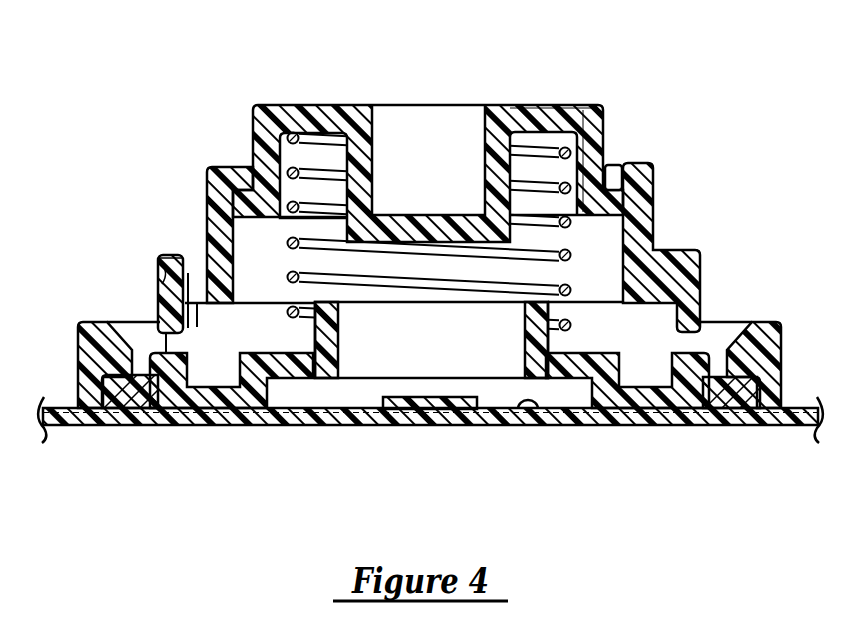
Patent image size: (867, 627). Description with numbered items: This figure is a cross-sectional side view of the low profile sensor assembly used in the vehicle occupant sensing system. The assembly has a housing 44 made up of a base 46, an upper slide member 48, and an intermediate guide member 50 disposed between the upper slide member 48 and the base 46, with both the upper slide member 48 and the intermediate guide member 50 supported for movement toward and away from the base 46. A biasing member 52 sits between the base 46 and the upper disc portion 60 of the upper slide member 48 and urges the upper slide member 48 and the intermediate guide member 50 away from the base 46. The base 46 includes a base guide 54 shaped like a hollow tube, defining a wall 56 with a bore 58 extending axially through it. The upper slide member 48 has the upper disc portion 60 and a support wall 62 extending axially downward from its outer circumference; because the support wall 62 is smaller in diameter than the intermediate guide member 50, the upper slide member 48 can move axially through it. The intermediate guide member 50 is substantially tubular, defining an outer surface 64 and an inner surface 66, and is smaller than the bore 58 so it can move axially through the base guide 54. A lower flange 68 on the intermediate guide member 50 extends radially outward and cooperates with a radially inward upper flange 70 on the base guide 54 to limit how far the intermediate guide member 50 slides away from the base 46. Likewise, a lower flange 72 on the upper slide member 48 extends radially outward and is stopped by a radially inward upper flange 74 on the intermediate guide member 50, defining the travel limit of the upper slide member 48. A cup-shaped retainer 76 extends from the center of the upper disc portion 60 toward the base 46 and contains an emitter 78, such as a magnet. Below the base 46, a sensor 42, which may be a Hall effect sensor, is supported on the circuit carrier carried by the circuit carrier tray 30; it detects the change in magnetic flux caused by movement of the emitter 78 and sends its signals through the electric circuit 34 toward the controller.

The circuit carrier tray 30 is at (672, 421).
The electric circuit 34 is at (528, 411).
The sensor 42 is at (433, 412).
The housing 44 is at (680, 239).
The base 46 is at (702, 311).
The upper slide member 48 is at (550, 113).
The intermediate guide member 50 is at (642, 181).
The biasing member 52 is at (297, 242).
The base guide 54 is at (168, 302).
The wall 56 is at (155, 278).
The bore 58 is at (153, 253).
The upper disc portion 60 is at (303, 107).
The support wall 62 is at (592, 137).
The outer surface 64 is at (642, 194).
The inner surface 66 is at (660, 222).
The lower flange 68 is at (667, 283).
The upper flange 70 is at (690, 253).
The lower flange 72 is at (601, 208).
The upper flange 74 is at (623, 160).
The retainer 76 is at (383, 150).
The emitter 78 is at (437, 130).